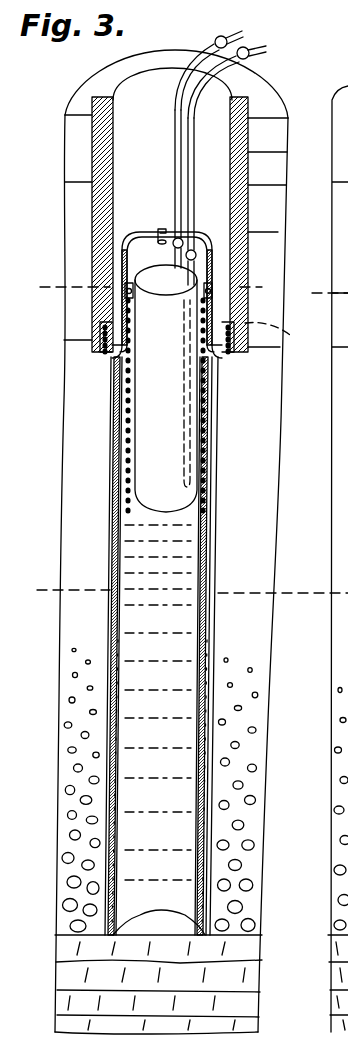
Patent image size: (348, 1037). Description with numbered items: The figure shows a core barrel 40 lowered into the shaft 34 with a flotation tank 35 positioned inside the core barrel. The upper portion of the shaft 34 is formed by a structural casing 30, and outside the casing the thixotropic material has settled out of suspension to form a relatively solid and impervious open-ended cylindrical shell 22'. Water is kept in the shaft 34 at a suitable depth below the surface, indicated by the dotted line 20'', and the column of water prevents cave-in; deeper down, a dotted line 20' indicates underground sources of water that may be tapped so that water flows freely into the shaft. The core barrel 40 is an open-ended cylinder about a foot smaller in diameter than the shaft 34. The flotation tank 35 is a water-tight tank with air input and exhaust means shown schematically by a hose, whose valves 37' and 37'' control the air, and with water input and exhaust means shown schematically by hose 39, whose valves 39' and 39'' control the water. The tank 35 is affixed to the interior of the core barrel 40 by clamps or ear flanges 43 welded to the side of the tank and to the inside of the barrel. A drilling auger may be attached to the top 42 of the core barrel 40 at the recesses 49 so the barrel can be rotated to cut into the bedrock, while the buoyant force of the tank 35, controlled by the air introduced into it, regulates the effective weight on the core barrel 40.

The hose 39 is at (197, 138).
The valve means 39' is at (243, 28).
The valve means 37' is at (271, 46).
The cylindrical layer or shell 22' is at (275, 207).
The structural casing 30 is at (234, 153).
The recesses 49 is at (158, 228).
The top of the core barrel 42 is at (213, 238).
The valve means 37'' is at (257, 243).
The clamps or ear flanges 43 is at (213, 290).
The valve means 39'' is at (100, 245).
The water level 20'' is at (194, 325).
The flotation tank 35 is at (195, 418).
The underground water source 20' is at (192, 577).
The shaft 34 is at (212, 640).
The core barrel 40 is at (203, 815).